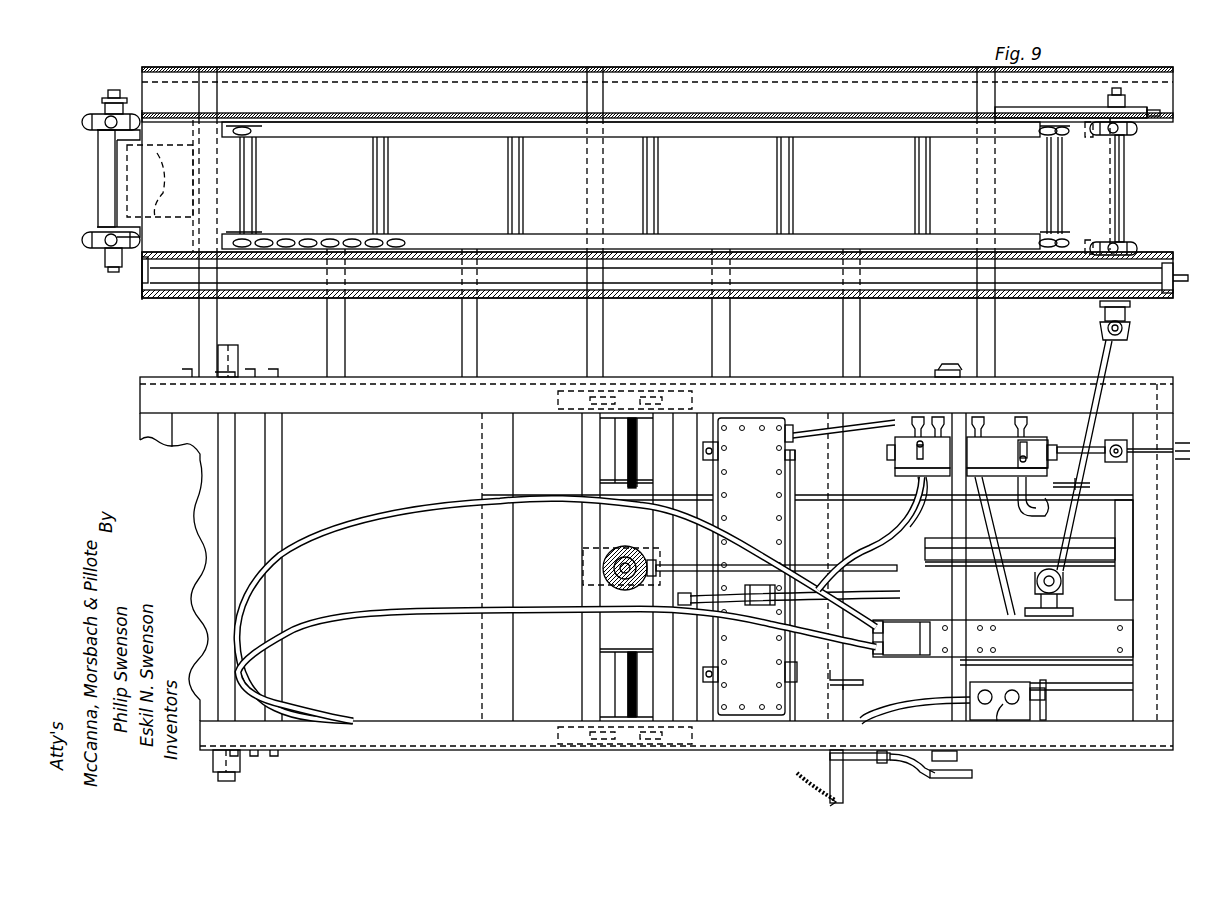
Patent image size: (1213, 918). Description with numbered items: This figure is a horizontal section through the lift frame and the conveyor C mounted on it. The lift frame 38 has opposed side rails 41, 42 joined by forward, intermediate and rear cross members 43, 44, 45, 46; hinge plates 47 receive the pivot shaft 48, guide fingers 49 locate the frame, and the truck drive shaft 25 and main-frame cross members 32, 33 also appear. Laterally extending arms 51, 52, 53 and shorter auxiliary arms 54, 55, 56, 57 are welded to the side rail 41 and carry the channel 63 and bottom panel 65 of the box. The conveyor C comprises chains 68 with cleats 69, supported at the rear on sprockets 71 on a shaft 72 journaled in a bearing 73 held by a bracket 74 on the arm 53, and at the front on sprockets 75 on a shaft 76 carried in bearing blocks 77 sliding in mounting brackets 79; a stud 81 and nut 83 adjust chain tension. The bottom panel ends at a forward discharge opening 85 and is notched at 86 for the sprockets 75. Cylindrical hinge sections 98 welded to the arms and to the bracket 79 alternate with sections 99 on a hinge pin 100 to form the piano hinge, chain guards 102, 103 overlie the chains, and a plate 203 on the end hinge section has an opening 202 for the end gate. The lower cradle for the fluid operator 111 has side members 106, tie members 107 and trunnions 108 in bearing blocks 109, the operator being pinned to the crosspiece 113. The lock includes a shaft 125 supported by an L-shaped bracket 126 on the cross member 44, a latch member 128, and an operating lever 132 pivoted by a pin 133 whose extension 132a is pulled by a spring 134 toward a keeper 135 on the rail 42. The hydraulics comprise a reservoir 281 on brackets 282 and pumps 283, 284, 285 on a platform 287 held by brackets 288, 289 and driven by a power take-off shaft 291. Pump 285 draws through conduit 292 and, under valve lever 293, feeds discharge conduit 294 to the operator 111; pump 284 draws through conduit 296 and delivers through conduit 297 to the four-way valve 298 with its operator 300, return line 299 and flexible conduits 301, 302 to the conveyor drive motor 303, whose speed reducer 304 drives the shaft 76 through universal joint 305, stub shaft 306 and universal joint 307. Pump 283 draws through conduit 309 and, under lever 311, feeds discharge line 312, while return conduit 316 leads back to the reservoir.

The drive shaft 25 is at (1108, 559).
The intermediate cross member 32 is at (705, 494).
The rear cross member 33 is at (272, 500).
The lift frame 38 is at (518, 760).
The side rail 41 is at (382, 398).
The side rail 42 is at (385, 737).
The forward cross member 43 is at (1152, 693).
The intermediate cross member 44 is at (795, 716).
The cross member 45 is at (500, 698).
The rear cross member 46 is at (150, 437).
The hinge plates 47 is at (243, 772).
The shaft 48 is at (228, 500).
The guide fingers 49 is at (960, 758).
The laterally extending arm 51 is at (983, 93).
The laterally extending arm 52 is at (596, 90).
The laterally extending arm 53 is at (210, 93).
The auxiliary support arm 54 is at (863, 360).
The auxiliary support arm 55 is at (733, 362).
The auxiliary support arm 56 is at (480, 362).
The auxiliary support arm 57 is at (348, 352).
The channel 63 is at (692, 70).
The bottom panel 65 is at (868, 148).
The chains 68 is at (286, 233).
The cleats 69 is at (383, 203).
The sprockets 71 is at (87, 244).
The shaft 72 is at (115, 272).
The bearing 73 is at (107, 182).
The bracket 74 is at (160, 186).
The sprockets 75 is at (1133, 132).
The shaft 76 is at (1124, 214).
The bearing blocks 77 is at (1120, 107).
The mounting brackets 79 is at (1020, 108).
The stud 81 is at (1160, 112).
The nut 83 is at (1148, 110).
The forward discharge opening 85 is at (1124, 180).
The notch 86 is at (1096, 138).
The cylindrical hinge sections 98 is at (1079, 320).
The cylindrical hinge sections 99 is at (400, 320).
The hinge pin 100 is at (537, 298).
The chain guard 102 is at (700, 130).
The chain guard 103 is at (672, 239).
The side members 106 is at (665, 457).
The tie members 107 is at (608, 653).
The trunnions 108 is at (625, 697).
The bearing blocks 109 is at (578, 751).
The fluid operator 111 is at (614, 553).
The crosspiece 113 is at (585, 570).
The shaft 125 is at (845, 782).
The L-shaped bracket 126 is at (855, 673).
The latch member 128 is at (858, 687).
The operating lever 132 is at (932, 777).
The lever portion 132a is at (797, 773).
The pin 133 is at (842, 757).
The spring 134 is at (826, 793).
The keeper 135 is at (893, 753).
The opening 202 is at (148, 267).
The plate 203 is at (140, 287).
The fluid reservoir 281 is at (736, 724).
The brackets 282 is at (797, 680).
The fluid pump 283 is at (1037, 447).
The fluid pump 284 is at (988, 443).
The fluid pump 285 is at (940, 443).
The auxiliary support platform 287 is at (1070, 441).
The bracket 288 is at (1079, 486).
The bracket 289 is at (878, 502).
The power take-off shaft 291 is at (1130, 450).
The conduit 292 is at (852, 422).
The valve operating lever 293 is at (918, 463).
The discharge conduit 294 is at (886, 546).
The conduit 296 is at (938, 370).
The conduit 297 is at (1005, 580).
The four-way valve 298 is at (1025, 712).
The fluid return line 299 is at (884, 598).
The operator 300 is at (1046, 698).
The flexible conduit 301 is at (1003, 714).
The flexible conduit 302 is at (913, 700).
The hydraulic conveyor drive motor 303 is at (890, 630).
The speed reducing mechanism 304 is at (1110, 642).
The universal joint 305 is at (1060, 590).
The stub shaft 306 is at (1066, 531).
The universal joint 307 is at (1124, 326).
The conduit 309 is at (968, 418).
The operating lever 311 is at (1015, 452).
The discharge line 312 is at (1047, 512).
The conduit 316 is at (692, 604).
The conveyor C is at (726, 102).